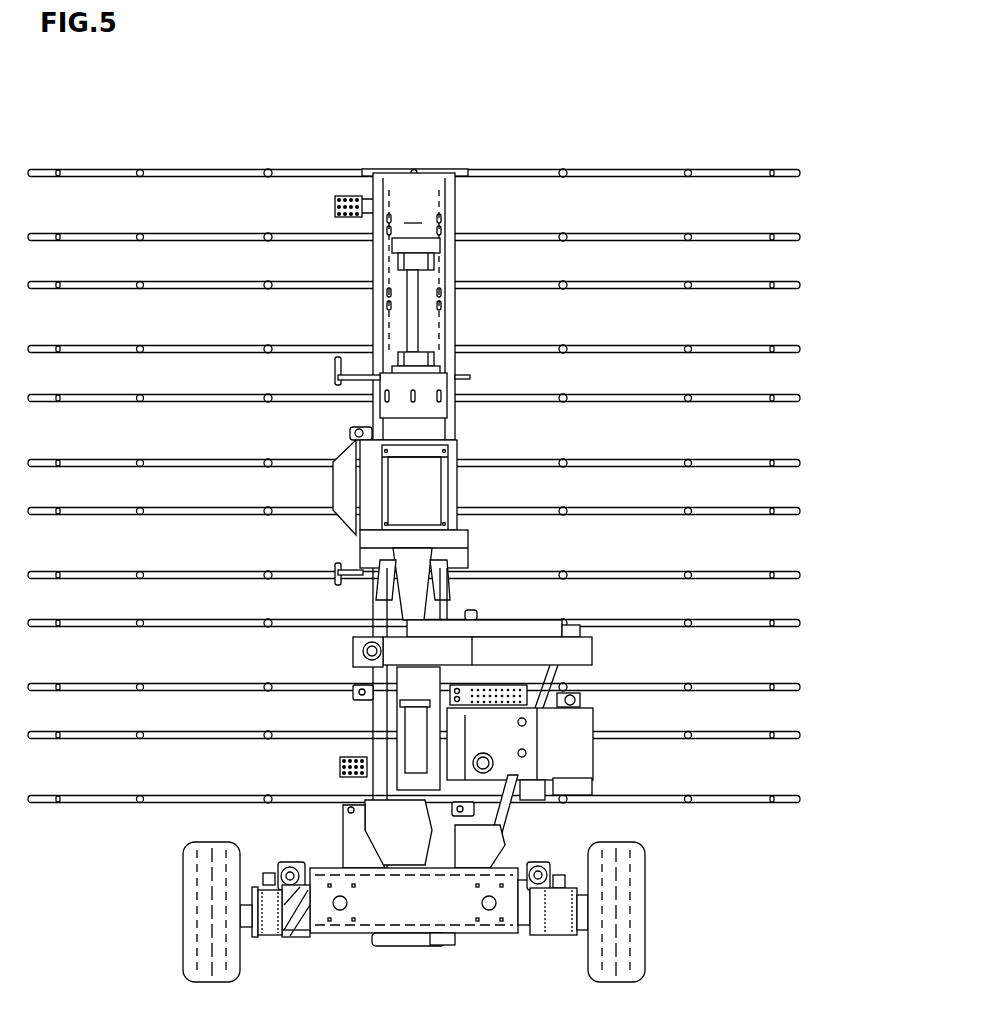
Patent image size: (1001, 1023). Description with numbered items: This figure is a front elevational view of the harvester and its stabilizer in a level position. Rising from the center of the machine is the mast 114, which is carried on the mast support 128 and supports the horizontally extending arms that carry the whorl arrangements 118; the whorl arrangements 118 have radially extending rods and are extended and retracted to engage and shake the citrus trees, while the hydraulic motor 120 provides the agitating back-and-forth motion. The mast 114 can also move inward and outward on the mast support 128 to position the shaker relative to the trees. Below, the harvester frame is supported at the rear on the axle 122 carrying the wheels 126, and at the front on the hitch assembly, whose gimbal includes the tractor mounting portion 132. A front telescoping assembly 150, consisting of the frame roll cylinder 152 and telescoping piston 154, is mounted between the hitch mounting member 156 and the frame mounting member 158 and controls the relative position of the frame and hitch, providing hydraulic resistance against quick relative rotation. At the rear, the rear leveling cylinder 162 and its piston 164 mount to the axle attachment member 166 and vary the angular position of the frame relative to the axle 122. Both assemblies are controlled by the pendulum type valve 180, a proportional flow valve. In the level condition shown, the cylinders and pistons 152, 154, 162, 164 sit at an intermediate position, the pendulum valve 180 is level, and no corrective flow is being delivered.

The whorl arrangements 118 is at (580, 137).
The mast 114 is at (432, 202).
The mast support 128 is at (430, 497).
The pendulum type valve 180 is at (578, 699).
The hydraulic motor 120 is at (527, 733).
The piston 154 is at (462, 810).
The telescoping assembly 150 is at (508, 820).
The frame mounting member 158 is at (482, 833).
The hitch mounting member 156 is at (343, 827).
The cylinder 152 is at (412, 813).
The tractor mounting portion 132 is at (502, 922).
The rear leveling cylinder 162 is at (325, 868).
The piston 164 is at (297, 903).
The axle attachment member 166 is at (270, 920).
The axle 122 is at (290, 930).
The wheels 126 is at (195, 855).